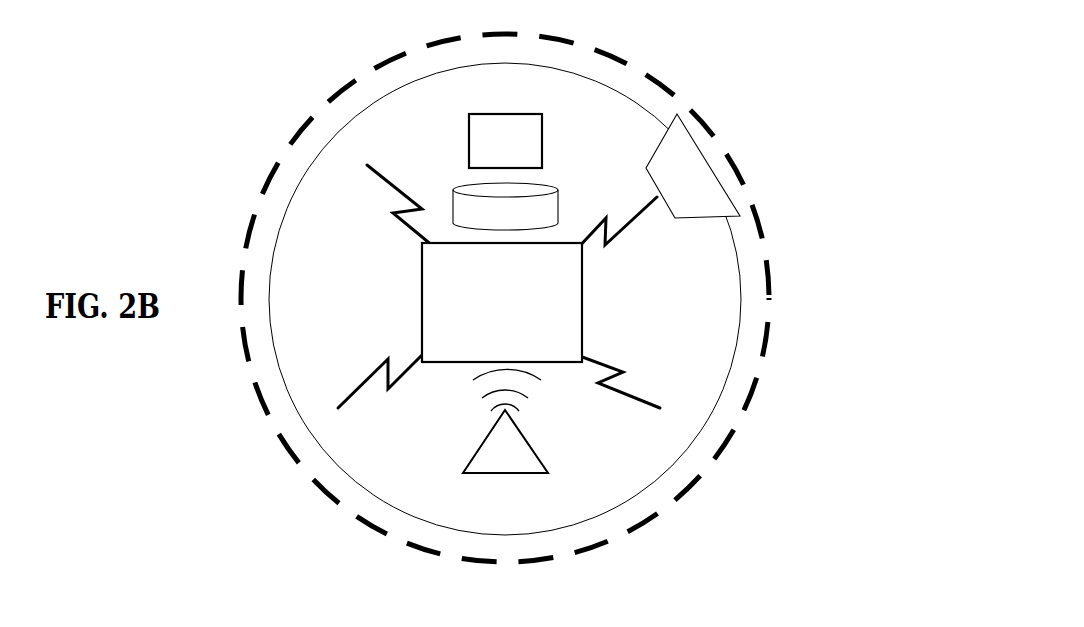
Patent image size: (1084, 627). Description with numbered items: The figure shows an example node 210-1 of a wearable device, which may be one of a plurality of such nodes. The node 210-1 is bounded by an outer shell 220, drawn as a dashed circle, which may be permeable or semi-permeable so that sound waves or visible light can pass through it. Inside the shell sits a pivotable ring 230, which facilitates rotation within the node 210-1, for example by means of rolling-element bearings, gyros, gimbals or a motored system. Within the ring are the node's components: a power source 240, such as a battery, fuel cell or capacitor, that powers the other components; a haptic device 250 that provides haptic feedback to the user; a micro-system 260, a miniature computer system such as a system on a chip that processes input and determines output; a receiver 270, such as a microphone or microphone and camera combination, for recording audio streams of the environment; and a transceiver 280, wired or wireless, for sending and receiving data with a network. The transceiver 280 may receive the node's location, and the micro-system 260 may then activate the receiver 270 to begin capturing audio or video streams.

The node 210-1 is at (266, 463).
The outer shell 220 is at (767, 347).
The pivotable ring 230 is at (737, 268).
The power source 240 is at (485, 221).
The haptic device 250 is at (482, 314).
The micro-system 260 is at (485, 152).
The receiver 270 is at (667, 192).
The transceiver 280 is at (485, 467).